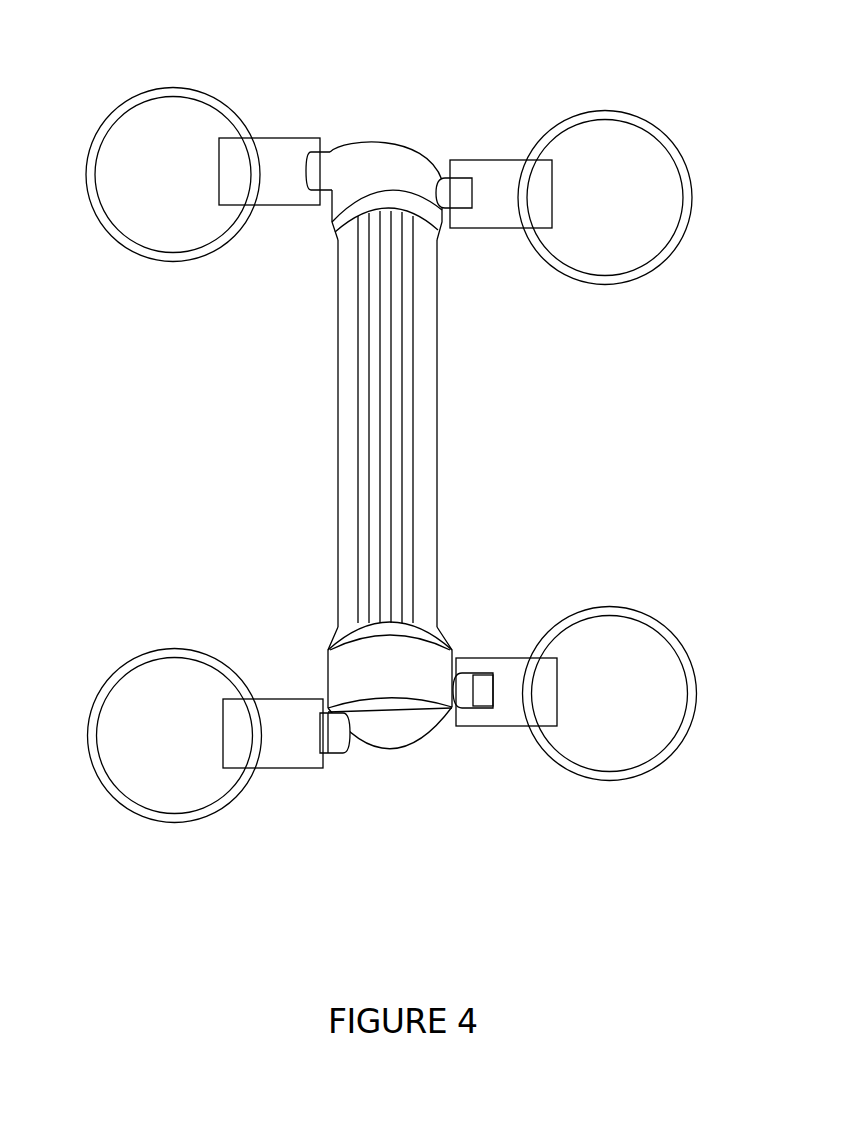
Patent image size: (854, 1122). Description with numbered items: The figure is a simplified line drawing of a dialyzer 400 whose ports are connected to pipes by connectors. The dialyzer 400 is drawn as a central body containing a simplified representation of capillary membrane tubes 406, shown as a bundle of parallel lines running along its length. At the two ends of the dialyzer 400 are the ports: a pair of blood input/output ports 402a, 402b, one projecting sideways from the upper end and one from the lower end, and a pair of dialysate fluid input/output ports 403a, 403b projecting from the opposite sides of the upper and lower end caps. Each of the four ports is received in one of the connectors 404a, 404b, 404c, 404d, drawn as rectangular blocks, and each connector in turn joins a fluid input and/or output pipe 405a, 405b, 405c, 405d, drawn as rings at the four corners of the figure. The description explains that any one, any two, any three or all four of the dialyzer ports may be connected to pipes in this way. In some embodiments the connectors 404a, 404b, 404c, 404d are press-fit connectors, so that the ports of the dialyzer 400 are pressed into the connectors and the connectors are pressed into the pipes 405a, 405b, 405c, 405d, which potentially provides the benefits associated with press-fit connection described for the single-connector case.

The dialyzer 400 is at (190, 358).
The blood input/output port 402a is at (330, 152).
The blood input/output port 402b is at (332, 755).
The dialysate fluid input/output port 403a is at (460, 178).
The dialysate fluid input/output port 403b is at (450, 712).
The connector 404a is at (502, 160).
The connector 404b is at (272, 138).
The connector 404c is at (505, 658).
The connector 404d is at (272, 699).
The fluid input/output pipe 405a is at (603, 112).
The fluid input/output pipe 405b is at (170, 90).
The fluid input/output pipe 405c is at (608, 608).
The fluid input/output pipe 405d is at (172, 648).
The capillary membrane tubes 406 is at (365, 462).